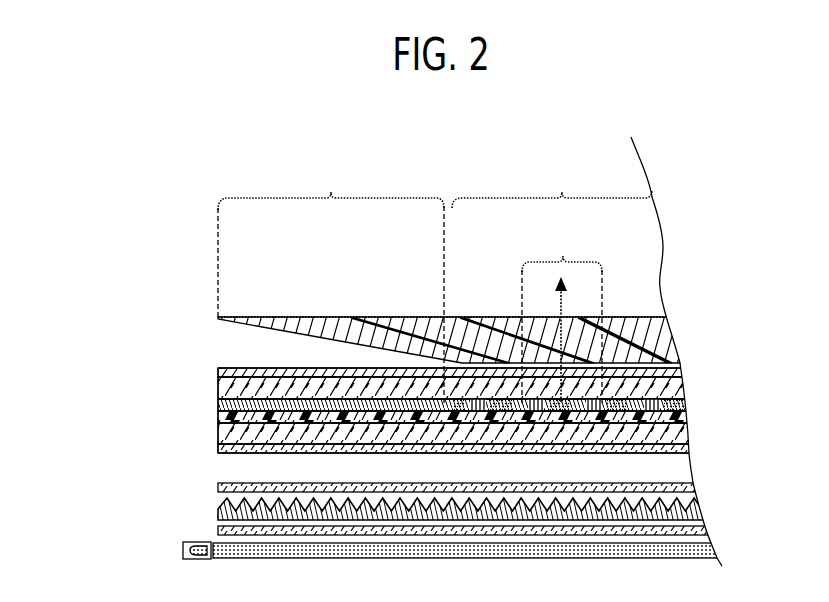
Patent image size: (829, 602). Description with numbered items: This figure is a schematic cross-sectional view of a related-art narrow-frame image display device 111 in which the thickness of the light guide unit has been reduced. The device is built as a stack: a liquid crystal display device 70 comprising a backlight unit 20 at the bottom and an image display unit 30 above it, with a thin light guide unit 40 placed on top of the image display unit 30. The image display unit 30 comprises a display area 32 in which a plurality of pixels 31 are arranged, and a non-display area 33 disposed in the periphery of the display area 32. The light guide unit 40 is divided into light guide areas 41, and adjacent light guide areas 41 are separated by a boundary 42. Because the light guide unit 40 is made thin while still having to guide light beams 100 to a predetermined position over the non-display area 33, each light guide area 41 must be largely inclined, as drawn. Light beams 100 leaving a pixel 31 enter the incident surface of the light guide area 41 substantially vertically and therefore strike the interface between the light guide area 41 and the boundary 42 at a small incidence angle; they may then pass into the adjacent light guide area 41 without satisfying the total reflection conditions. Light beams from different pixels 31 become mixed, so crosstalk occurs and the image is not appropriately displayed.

The image display device 111 is at (152, 162).
The liquid crystal display device 70 is at (116, 372).
The light guide unit 40 is at (168, 320).
The light guide area 41 is at (388, 318).
The boundary 42 is at (353, 318).
The image display unit 30 is at (168, 372).
The pixel 31 is at (562, 312).
The display area 32 is at (552, 182).
The non-display area 33 is at (331, 280).
The backlight unit 20 is at (168, 487).
The light beam 100 is at (565, 305).